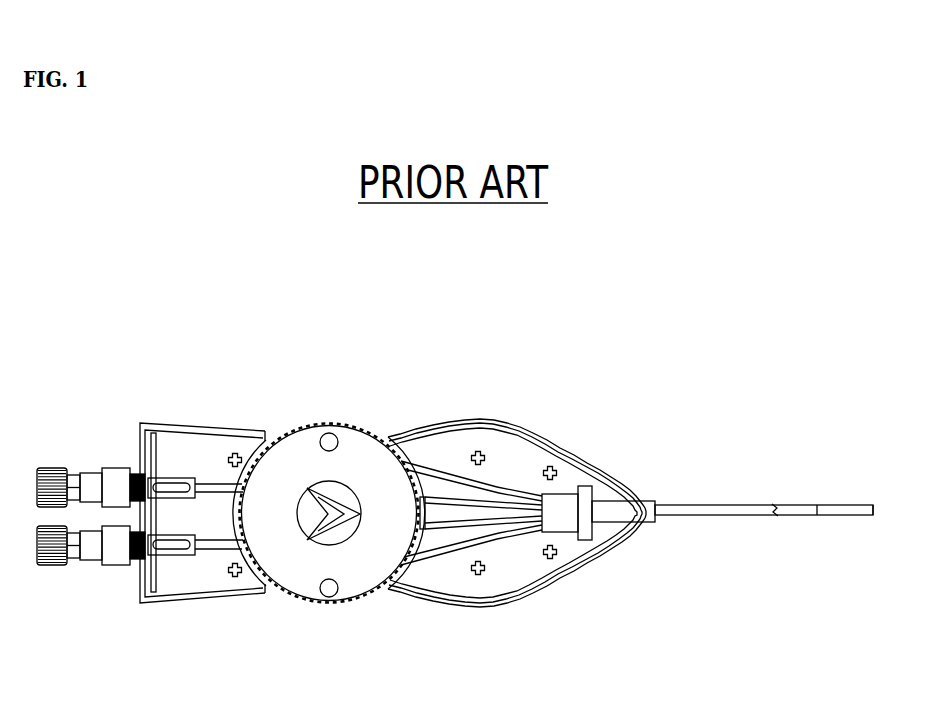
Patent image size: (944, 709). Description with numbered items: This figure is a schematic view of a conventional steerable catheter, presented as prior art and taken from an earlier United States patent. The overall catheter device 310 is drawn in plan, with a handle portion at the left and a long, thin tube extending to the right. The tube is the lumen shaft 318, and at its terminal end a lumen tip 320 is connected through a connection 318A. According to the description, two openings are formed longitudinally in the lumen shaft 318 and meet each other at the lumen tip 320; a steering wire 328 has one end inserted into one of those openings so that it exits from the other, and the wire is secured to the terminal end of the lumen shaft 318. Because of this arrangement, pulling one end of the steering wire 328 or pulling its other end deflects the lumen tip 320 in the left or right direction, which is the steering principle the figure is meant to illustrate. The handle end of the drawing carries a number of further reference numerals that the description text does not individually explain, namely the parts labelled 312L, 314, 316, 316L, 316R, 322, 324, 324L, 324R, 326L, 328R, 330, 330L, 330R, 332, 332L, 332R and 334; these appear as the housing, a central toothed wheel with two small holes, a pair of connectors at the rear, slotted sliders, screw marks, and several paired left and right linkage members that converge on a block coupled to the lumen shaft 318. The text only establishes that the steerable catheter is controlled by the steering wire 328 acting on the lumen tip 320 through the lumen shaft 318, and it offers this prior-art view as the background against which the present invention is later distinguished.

The prior art injector device 310 is at (387, 306).
The housing 312L is at (490, 418).
The plunger coupling 314 is at (659, 496).
The gear wheel 316 is at (326, 421).
The gear wheel left pin hole 316L is at (336, 440).
The gear wheel right pin hole 316R is at (330, 593).
The lumen shaft 318 is at (742, 502).
The connection 318A is at (817, 503).
The lumen tip 320 is at (863, 503).
The fluid connectors 322 is at (88, 470).
The rack slider 324 is at (173, 476).
The left rack slider 324L is at (190, 478).
The right rack slider 324R is at (190, 556).
The left housing screw 326L is at (241, 442).
The steering wire 328 is at (429, 462).
The right first link 328R is at (443, 555).
The second link 330 is at (446, 488).
The left second link 330L is at (489, 500).
The right second link 330R is at (481, 530).
The third link 332 is at (511, 485).
The left third link 332L is at (529, 496).
The right third link 332R is at (525, 535).
The coupling block 334 is at (572, 491).